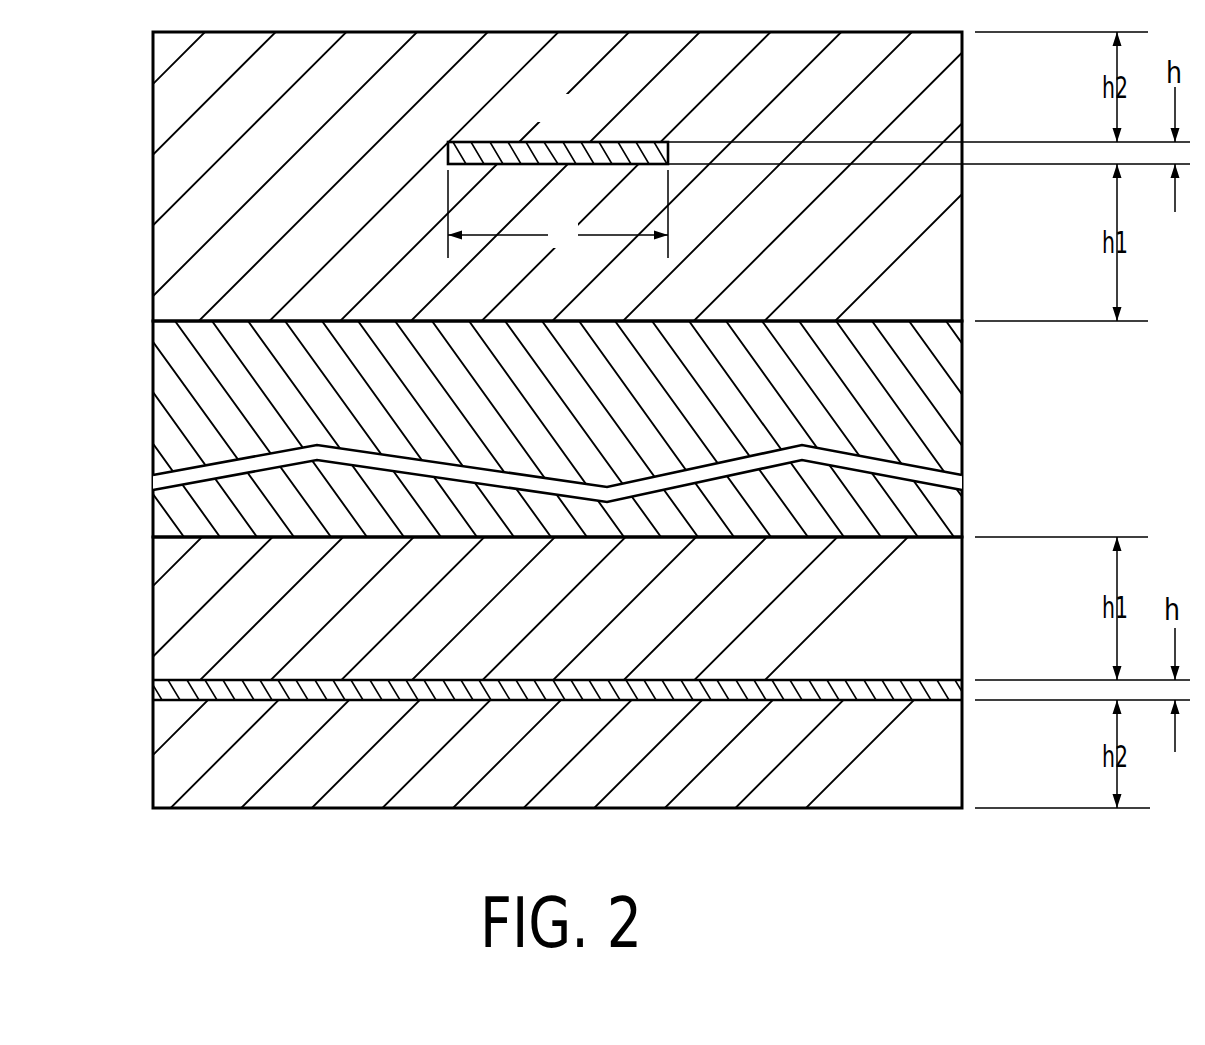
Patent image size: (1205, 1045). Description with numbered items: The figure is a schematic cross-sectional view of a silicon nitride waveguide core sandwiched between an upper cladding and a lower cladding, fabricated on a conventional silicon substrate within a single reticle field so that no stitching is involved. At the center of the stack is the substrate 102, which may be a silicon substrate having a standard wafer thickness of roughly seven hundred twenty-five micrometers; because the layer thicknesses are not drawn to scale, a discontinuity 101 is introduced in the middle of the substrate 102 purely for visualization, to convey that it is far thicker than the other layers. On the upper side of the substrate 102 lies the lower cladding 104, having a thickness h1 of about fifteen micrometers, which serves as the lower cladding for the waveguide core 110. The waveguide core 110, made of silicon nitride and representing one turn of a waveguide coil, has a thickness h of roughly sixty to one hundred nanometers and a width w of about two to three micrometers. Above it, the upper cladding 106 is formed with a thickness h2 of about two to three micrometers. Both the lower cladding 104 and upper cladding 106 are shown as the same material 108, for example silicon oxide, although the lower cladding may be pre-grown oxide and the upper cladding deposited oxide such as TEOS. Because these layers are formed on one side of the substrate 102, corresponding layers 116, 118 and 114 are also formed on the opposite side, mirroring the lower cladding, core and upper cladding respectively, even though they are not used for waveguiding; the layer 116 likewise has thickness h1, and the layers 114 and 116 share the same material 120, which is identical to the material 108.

The discontinuity 101 is at (737, 458).
The substrate 102 is at (569, 429).
The lower cladding 104 is at (950, 252).
The upper cladding 106 is at (950, 83).
The cladding material 108 is at (578, 522).
The waveguide core 110 is at (502, 140).
The backside upper layer 114 is at (935, 751).
The backside lower layer 116 is at (938, 597).
The backside core layer 118 is at (787, 692).
The backside cladding material 120 is at (602, 522).